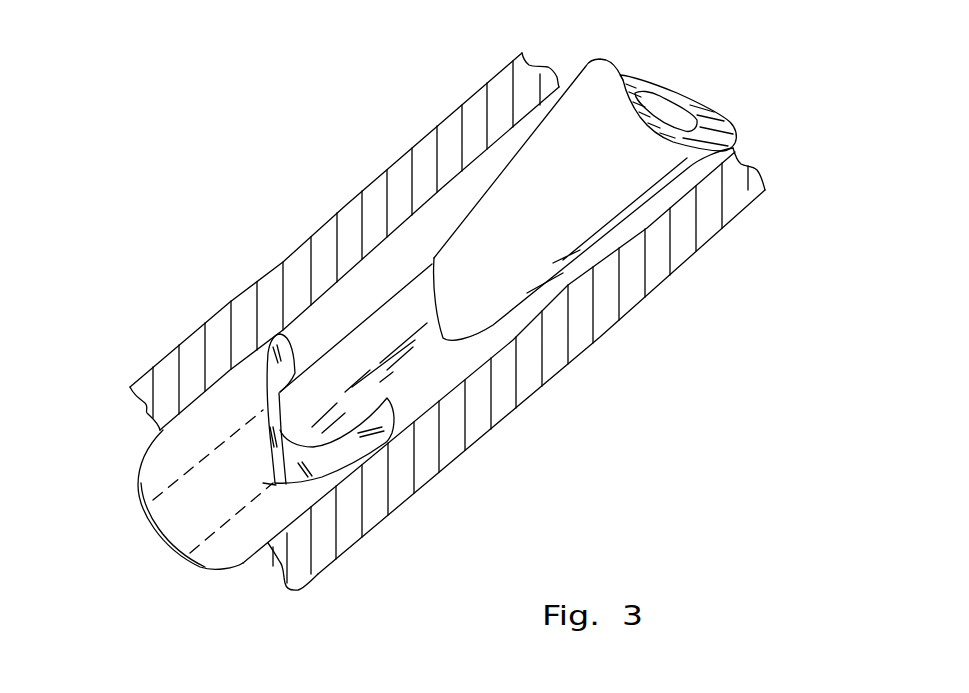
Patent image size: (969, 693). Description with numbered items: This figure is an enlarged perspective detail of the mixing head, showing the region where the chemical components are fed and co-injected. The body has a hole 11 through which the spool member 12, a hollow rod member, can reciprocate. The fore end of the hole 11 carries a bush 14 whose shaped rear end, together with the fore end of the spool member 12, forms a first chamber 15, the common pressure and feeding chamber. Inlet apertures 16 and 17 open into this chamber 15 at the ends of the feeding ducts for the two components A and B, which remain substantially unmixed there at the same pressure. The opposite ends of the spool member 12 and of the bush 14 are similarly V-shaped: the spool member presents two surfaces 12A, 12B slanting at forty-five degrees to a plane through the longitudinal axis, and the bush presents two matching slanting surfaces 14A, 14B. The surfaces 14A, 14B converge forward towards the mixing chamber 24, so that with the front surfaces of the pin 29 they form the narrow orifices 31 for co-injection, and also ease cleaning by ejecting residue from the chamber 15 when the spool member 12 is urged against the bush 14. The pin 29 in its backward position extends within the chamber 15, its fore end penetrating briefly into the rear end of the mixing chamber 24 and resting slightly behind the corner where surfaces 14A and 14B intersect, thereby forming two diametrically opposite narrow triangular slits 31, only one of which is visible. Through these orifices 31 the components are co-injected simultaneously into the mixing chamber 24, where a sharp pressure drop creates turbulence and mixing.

The hole 11 is at (636, 255).
The spool member 12 is at (637, 185).
The slanting surface 12A is at (488, 340).
The slanting surface 12B is at (433, 233).
The bush 14 is at (238, 543).
The slanting surface 14A is at (348, 461).
The slanting surface 14B is at (268, 380).
The first chamber 15 is at (410, 250).
The inlet aperture 16 is at (460, 433).
The inlet aperture 17 is at (321, 258).
The mixing chamber 24 is at (183, 507).
The pin 29 is at (333, 375).
The narrow orifice 31 is at (275, 477).